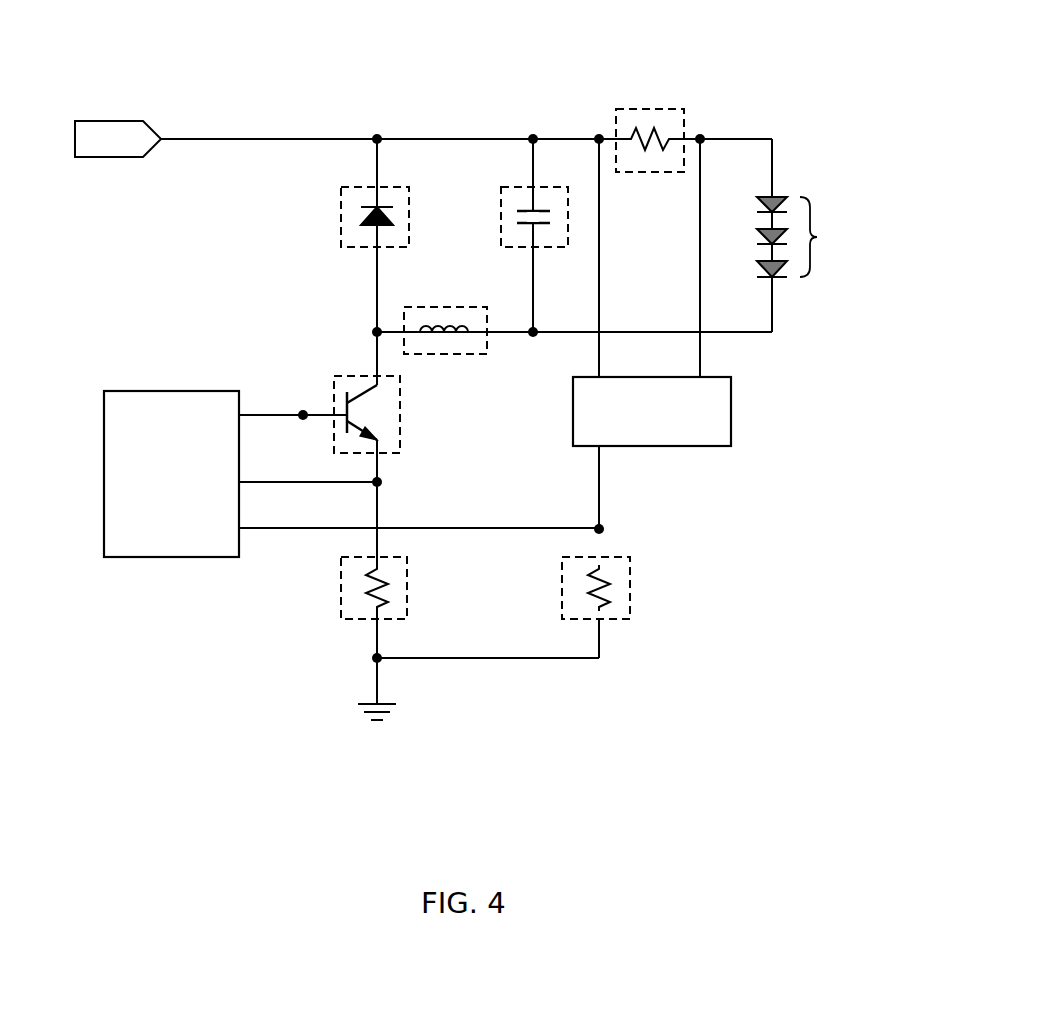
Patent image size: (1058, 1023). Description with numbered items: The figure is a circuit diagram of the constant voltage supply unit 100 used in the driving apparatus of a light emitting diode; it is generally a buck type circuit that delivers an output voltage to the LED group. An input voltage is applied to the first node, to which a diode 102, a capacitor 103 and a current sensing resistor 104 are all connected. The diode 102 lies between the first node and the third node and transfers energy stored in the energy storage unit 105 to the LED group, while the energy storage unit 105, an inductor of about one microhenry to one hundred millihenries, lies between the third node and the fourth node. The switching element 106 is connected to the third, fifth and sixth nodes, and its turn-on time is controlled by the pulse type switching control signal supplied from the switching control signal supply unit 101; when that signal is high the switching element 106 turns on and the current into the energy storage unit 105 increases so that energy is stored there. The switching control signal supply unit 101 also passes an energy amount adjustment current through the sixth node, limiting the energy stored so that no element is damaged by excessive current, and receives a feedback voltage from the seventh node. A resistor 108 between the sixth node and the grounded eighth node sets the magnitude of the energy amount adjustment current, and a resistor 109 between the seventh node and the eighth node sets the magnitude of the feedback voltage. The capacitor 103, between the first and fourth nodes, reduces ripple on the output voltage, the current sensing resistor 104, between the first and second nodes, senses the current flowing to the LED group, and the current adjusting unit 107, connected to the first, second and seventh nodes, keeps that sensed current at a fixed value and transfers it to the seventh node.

The constant voltage supply unit 100 is at (128, 53).
The switching control signal supply unit 101 is at (177, 391).
The diode 102 is at (341, 216).
The capacitor 103 is at (501, 216).
The current sensing resistor 104 is at (651, 109).
The energy storage unit 105 is at (447, 307).
The switching element 106 is at (400, 415).
The current adjusting unit 107 is at (731, 409).
The resistor 108 is at (407, 588).
The resistor 109 is at (630, 588).